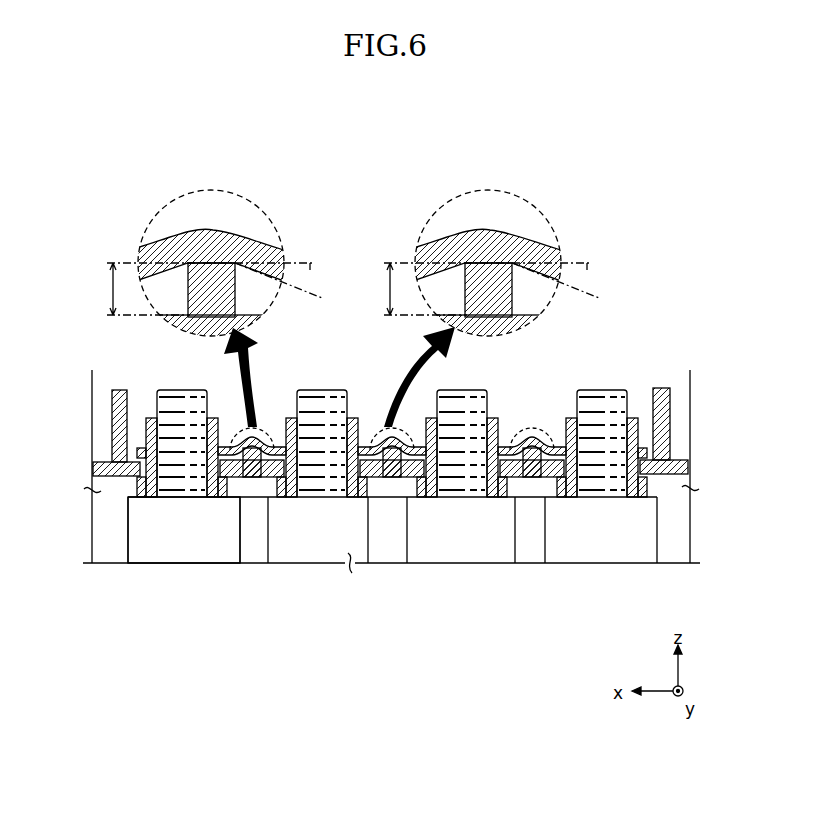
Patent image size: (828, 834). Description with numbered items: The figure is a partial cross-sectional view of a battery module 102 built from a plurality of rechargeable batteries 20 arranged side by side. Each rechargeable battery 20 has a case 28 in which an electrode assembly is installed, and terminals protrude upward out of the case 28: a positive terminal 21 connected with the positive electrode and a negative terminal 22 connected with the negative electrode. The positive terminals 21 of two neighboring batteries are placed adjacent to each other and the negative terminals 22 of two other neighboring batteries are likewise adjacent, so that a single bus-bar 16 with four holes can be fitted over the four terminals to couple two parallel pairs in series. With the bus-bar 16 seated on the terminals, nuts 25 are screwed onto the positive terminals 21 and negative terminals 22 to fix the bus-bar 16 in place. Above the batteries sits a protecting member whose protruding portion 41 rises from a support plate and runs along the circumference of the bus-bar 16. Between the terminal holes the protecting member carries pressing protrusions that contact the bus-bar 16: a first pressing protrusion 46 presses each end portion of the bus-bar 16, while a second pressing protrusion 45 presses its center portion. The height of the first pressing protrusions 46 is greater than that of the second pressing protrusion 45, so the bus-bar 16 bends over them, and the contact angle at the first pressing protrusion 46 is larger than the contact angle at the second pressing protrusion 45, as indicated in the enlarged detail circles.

The battery module 102 is at (365, 201).
The bus-bar 16 is at (524, 440).
The rechargeable battery 20 is at (124, 540).
The positive terminal 21 is at (183, 391).
The negative terminal 22 is at (463, 391).
The nut 25 is at (151, 418).
The case 28 is at (196, 544).
The protruding portion 41 is at (118, 420).
The second pressing protrusion 45 is at (386, 440).
The first pressing protrusion 46 is at (262, 440).